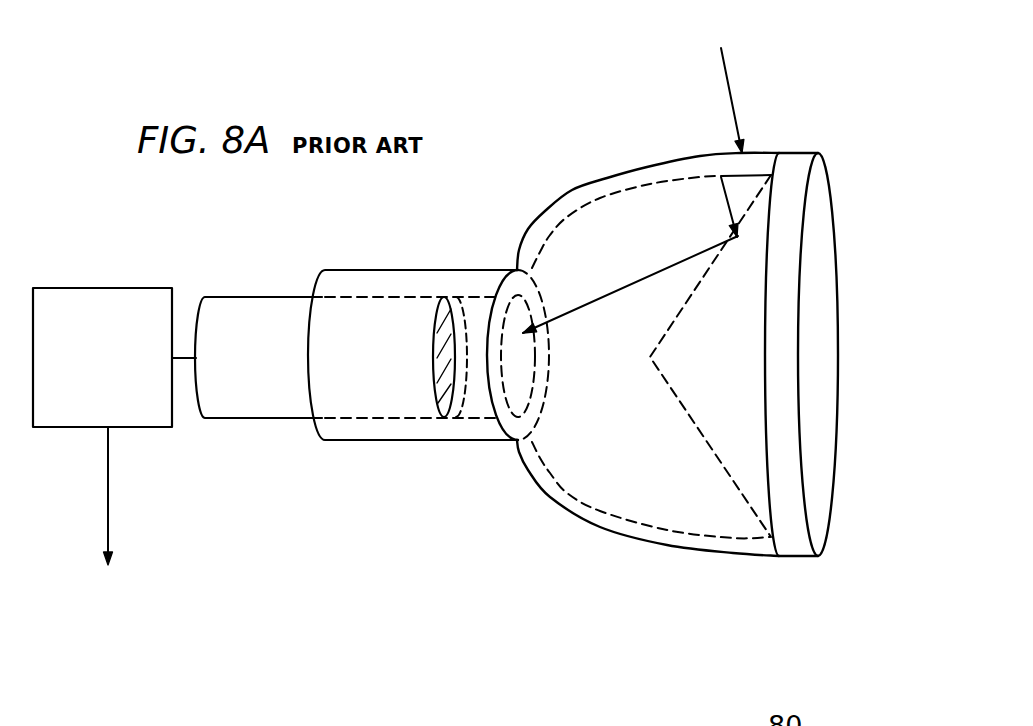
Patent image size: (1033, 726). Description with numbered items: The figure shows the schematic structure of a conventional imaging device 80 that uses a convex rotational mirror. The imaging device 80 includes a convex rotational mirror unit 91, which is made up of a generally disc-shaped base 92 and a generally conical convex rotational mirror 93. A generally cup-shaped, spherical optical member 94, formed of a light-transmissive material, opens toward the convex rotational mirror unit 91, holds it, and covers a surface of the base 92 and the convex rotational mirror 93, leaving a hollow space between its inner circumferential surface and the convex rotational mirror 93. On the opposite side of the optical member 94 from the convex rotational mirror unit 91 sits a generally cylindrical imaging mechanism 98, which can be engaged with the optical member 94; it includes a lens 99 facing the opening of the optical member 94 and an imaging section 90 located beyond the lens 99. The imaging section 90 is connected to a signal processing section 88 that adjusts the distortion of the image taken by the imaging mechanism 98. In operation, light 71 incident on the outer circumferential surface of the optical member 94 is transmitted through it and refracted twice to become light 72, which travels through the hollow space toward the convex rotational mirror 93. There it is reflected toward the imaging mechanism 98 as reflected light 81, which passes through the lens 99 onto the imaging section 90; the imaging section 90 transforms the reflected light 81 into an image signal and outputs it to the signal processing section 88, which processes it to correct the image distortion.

The imaging device 80 is at (815, 100).
The light 71 is at (721, 74).
The light 72 is at (720, 197).
The reflected light 81 is at (598, 297).
The signal processing section 88 is at (122, 287).
The imaging section 90 is at (283, 375).
The lens 99 is at (447, 388).
The imaging mechanism 98 is at (430, 485).
The optical member 94 is at (577, 538).
The convex rotational mirror 93 is at (748, 467).
The base 92 is at (805, 560).
The convex rotational mirror unit 91 is at (822, 626).